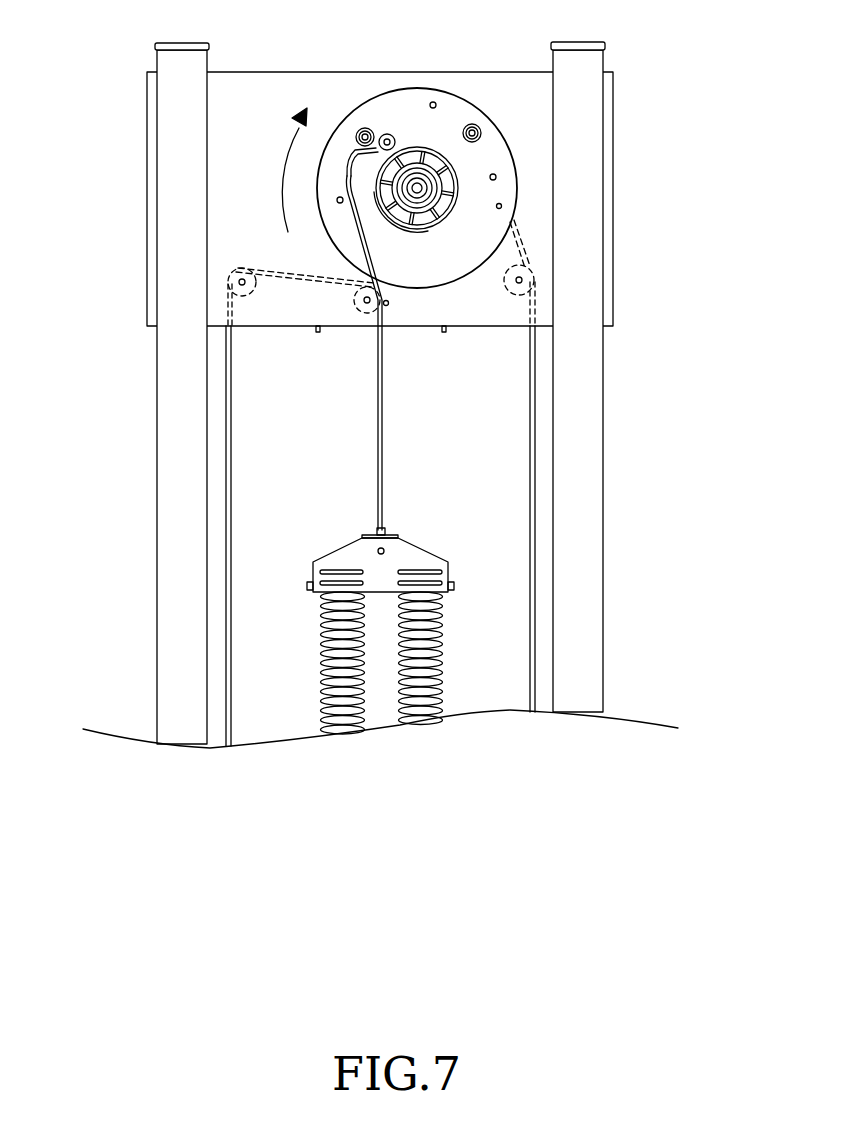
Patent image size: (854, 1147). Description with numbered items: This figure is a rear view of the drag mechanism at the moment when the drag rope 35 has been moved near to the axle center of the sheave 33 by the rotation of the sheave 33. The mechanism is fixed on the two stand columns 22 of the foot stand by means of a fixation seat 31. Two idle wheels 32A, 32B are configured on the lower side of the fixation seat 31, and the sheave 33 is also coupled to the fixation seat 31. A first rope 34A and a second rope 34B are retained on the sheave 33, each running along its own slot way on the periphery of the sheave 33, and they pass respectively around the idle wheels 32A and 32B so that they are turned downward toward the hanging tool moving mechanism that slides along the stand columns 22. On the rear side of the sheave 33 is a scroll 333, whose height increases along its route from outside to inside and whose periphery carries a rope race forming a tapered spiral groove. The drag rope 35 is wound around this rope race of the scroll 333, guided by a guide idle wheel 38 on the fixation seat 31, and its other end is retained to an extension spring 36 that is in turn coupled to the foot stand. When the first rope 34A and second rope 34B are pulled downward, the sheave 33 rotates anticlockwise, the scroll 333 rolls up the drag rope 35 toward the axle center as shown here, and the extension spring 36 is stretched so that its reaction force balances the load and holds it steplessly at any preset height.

The stand columns 22 is at (157, 533).
The fixation seat 31 is at (147, 200).
The idle wheel 32A is at (534, 280).
The idle wheel 32B is at (228, 282).
The sheave 33 is at (415, 87).
The scroll 333 is at (425, 190).
The first rope 34A is at (529, 475).
The second rope 34B is at (232, 477).
The drag rope 35 is at (383, 414).
The extension spring 36 is at (444, 647).
The guide idle wheel 38 is at (355, 312).